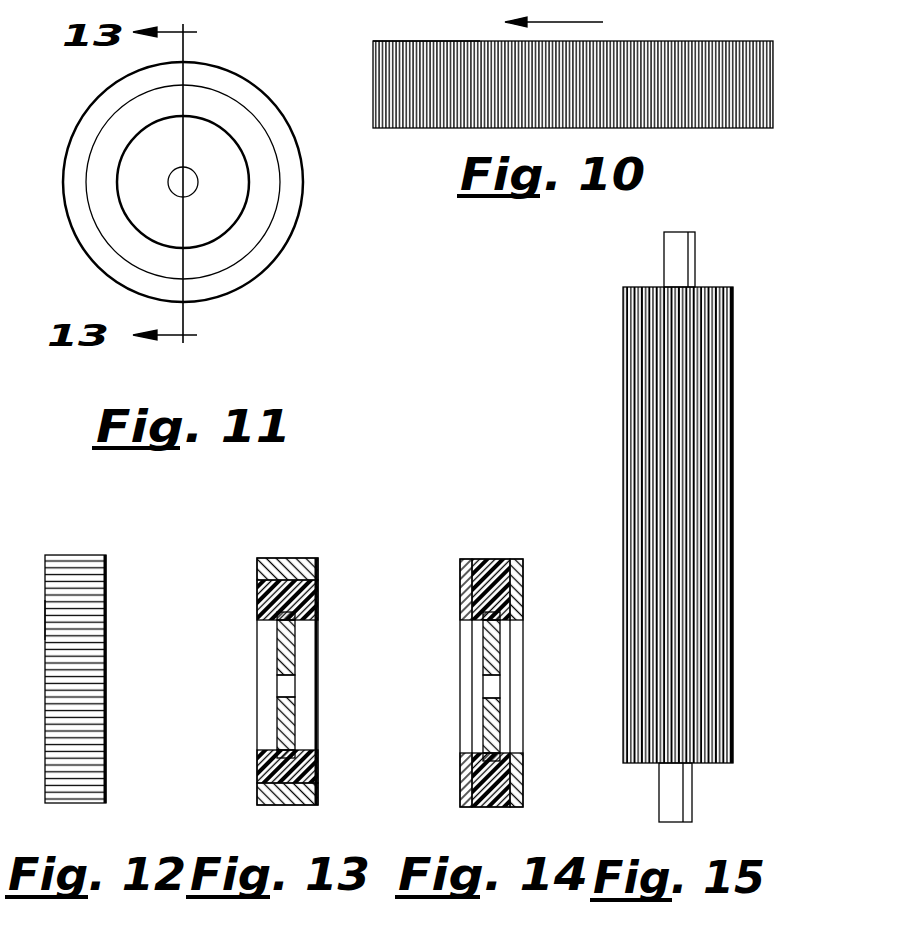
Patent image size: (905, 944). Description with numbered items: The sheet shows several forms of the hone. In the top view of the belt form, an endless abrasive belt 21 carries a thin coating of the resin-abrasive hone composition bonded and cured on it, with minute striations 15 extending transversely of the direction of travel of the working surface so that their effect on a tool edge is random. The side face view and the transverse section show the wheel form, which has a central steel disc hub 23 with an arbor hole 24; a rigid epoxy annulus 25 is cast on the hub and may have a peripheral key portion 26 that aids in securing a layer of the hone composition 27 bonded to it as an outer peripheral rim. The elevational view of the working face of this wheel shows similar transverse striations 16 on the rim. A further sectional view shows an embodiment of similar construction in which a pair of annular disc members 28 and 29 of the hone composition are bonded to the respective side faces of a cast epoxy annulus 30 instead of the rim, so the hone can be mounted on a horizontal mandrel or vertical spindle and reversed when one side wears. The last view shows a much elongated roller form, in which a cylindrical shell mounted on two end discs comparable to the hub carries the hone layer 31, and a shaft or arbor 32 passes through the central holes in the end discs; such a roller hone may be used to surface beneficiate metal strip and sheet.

In FIG. 10, the striations 15 is at (420, 53).
In FIG. 10, the endless abrasive belt 21 is at (703, 45).
In FIG. 11, the central steel disc hub 23 is at (205, 142).
In FIG. 13, the central steel disc hub 23 is at (297, 645).
In FIG. 14, the central steel disc hub 23 is at (500, 645).
In FIG. 11, the arbor hole 24 is at (168, 182).
In FIG. 13, the arbor hole 24 is at (287, 673).
In FIG. 14, the arbor hole 24 is at (493, 677).
In FIG. 11, the rigid epoxy annulus 25 is at (237, 257).
In FIG. 13, the rigid epoxy annulus 25 is at (318, 767).
In FIG. 11, the layer of hone composition 27 is at (98, 272).
In FIG. 12, the layer of hone composition 27 is at (83, 623).
In FIG. 13, the layer of hone composition 27 is at (318, 795).
In FIG. 12, the striations 16 is at (70, 557).
In FIG. 13, the peripheral key portion 26 is at (287, 582).
In FIG. 14, the annular disc member 28 is at (463, 592).
In FIG. 14, the annular disc member 29 is at (523, 592).
In FIG. 14, the cast epoxy annulus 30 is at (495, 560).
In FIG. 15, the hone layer 31 is at (652, 415).
In FIG. 15, the shaft or arbor 32 is at (663, 248).